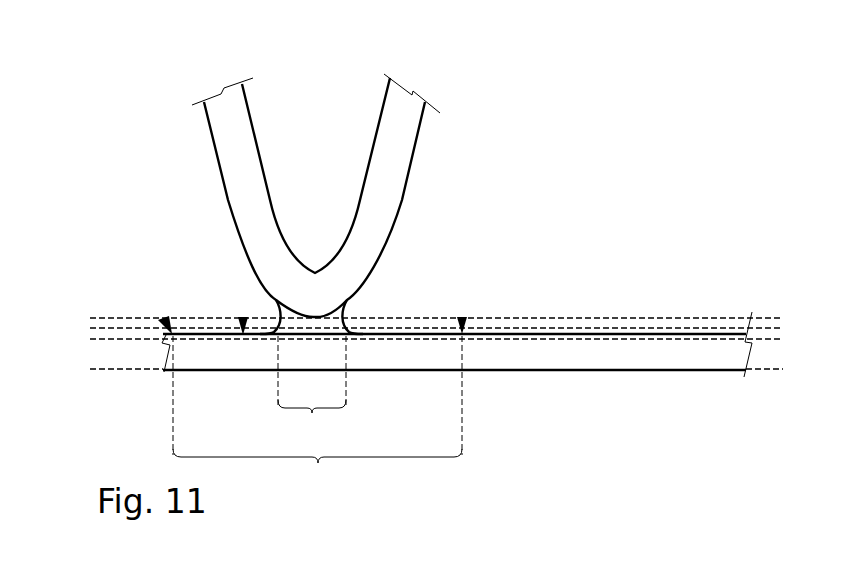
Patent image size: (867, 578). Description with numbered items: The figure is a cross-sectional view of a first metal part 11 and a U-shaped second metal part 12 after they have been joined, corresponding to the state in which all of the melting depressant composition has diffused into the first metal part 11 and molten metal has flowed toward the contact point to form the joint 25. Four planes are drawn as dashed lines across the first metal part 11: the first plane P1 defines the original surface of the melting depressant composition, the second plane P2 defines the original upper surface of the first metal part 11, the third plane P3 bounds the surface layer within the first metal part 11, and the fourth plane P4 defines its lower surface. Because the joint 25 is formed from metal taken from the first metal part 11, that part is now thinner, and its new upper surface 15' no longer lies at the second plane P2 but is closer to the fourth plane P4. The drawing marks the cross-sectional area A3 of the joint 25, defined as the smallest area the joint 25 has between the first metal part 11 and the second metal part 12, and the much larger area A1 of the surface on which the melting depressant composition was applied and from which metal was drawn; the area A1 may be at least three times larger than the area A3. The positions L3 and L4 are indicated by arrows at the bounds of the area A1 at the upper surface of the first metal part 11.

The second metal part 12 is at (215, 117).
The upper surface 15' is at (196, 266).
The first metal part 11 is at (182, 350).
The joint 25 is at (345, 333).
The location L3 is at (462, 317).
The location L4 is at (163, 318).
The first plane P1 is at (112, 318).
The second plane P2 is at (97, 328).
The third plane P3 is at (97, 339).
The fourth plane P4 is at (97, 369).
The area A1 is at (318, 463).
The cross-sectional area A3 is at (312, 413).